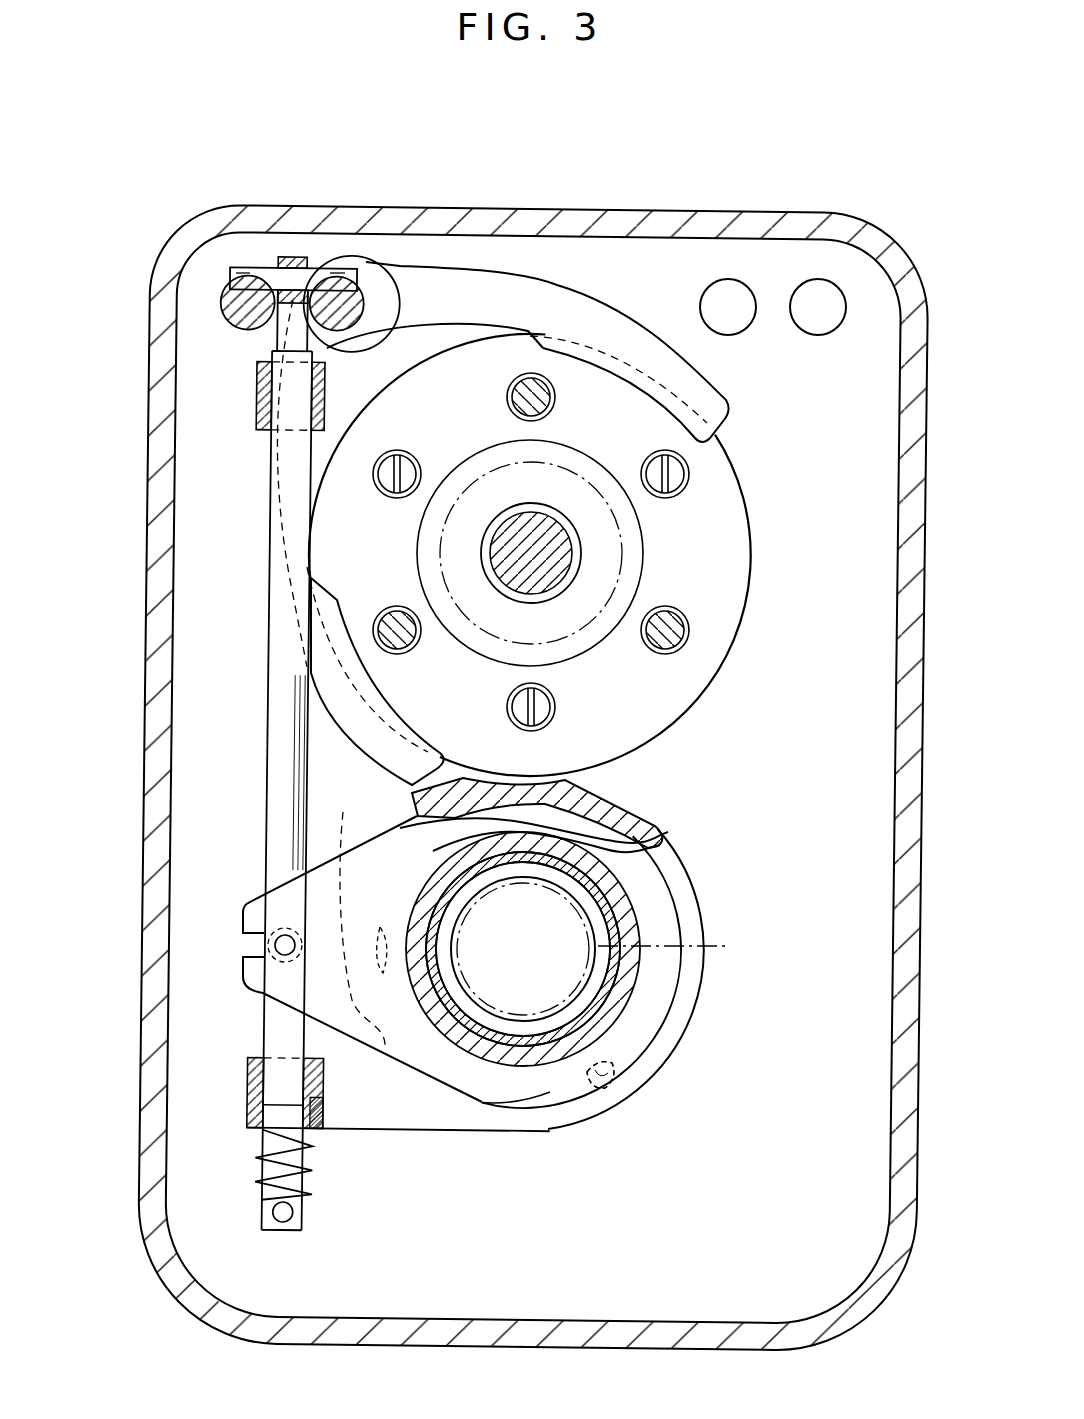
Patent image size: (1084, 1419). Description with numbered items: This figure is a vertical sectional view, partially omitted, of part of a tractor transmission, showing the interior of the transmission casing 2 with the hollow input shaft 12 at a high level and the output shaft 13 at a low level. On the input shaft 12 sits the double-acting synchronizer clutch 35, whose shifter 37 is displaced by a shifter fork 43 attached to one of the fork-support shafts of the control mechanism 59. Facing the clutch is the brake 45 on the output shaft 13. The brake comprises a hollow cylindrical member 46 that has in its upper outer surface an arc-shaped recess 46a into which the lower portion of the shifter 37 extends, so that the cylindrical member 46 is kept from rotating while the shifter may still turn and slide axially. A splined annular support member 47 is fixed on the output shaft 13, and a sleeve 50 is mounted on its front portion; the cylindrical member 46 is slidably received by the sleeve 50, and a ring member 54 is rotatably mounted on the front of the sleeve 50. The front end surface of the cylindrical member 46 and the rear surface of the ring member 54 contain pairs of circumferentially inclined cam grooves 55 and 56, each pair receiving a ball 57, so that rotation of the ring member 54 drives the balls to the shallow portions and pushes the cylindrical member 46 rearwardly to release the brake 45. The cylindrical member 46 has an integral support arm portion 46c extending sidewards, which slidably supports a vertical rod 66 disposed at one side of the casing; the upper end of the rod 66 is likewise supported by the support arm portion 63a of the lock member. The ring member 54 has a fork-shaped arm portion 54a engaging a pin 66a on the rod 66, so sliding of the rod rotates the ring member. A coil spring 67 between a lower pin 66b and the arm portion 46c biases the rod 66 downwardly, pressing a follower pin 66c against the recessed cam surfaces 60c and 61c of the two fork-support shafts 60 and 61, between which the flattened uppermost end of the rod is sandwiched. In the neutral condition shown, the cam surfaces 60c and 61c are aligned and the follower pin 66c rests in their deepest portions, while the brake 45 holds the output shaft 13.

The transmission casing 2 is at (737, 224).
The input shaft 12 is at (548, 565).
The output shaft 13 is at (575, 941).
The synchronizer clutch 35 is at (752, 472).
The shifter 37 is at (727, 585).
The shifter fork 43 is at (517, 293).
The brake 45 is at (672, 1082).
The cylindrical member 46 is at (640, 822).
The arc-shaped recess 46a is at (543, 777).
The support arm portion 46c is at (345, 1120).
The support member 47 is at (487, 1022).
The sleeve 50 is at (543, 1057).
The ring member 54 is at (660, 1000).
The fork-shaped arm portion 54a is at (244, 900).
The cam groove 55 is at (600, 1075).
The cam groove 56 is at (612, 1062).
The ball 57 is at (618, 1190).
The control mechanism 59 is at (418, 258).
The fork-support shaft 60 is at (232, 303).
The cam surface 60c is at (245, 285).
The fork-support shaft 61 is at (352, 303).
The cam surface 61c is at (338, 285).
The support arm portion 63a is at (273, 398).
The vertical rod 66 is at (268, 710).
The pin 66a is at (282, 960).
The pin 66b is at (286, 1222).
The follower pin 66c is at (268, 268).
The coil spring 67 is at (262, 1160).